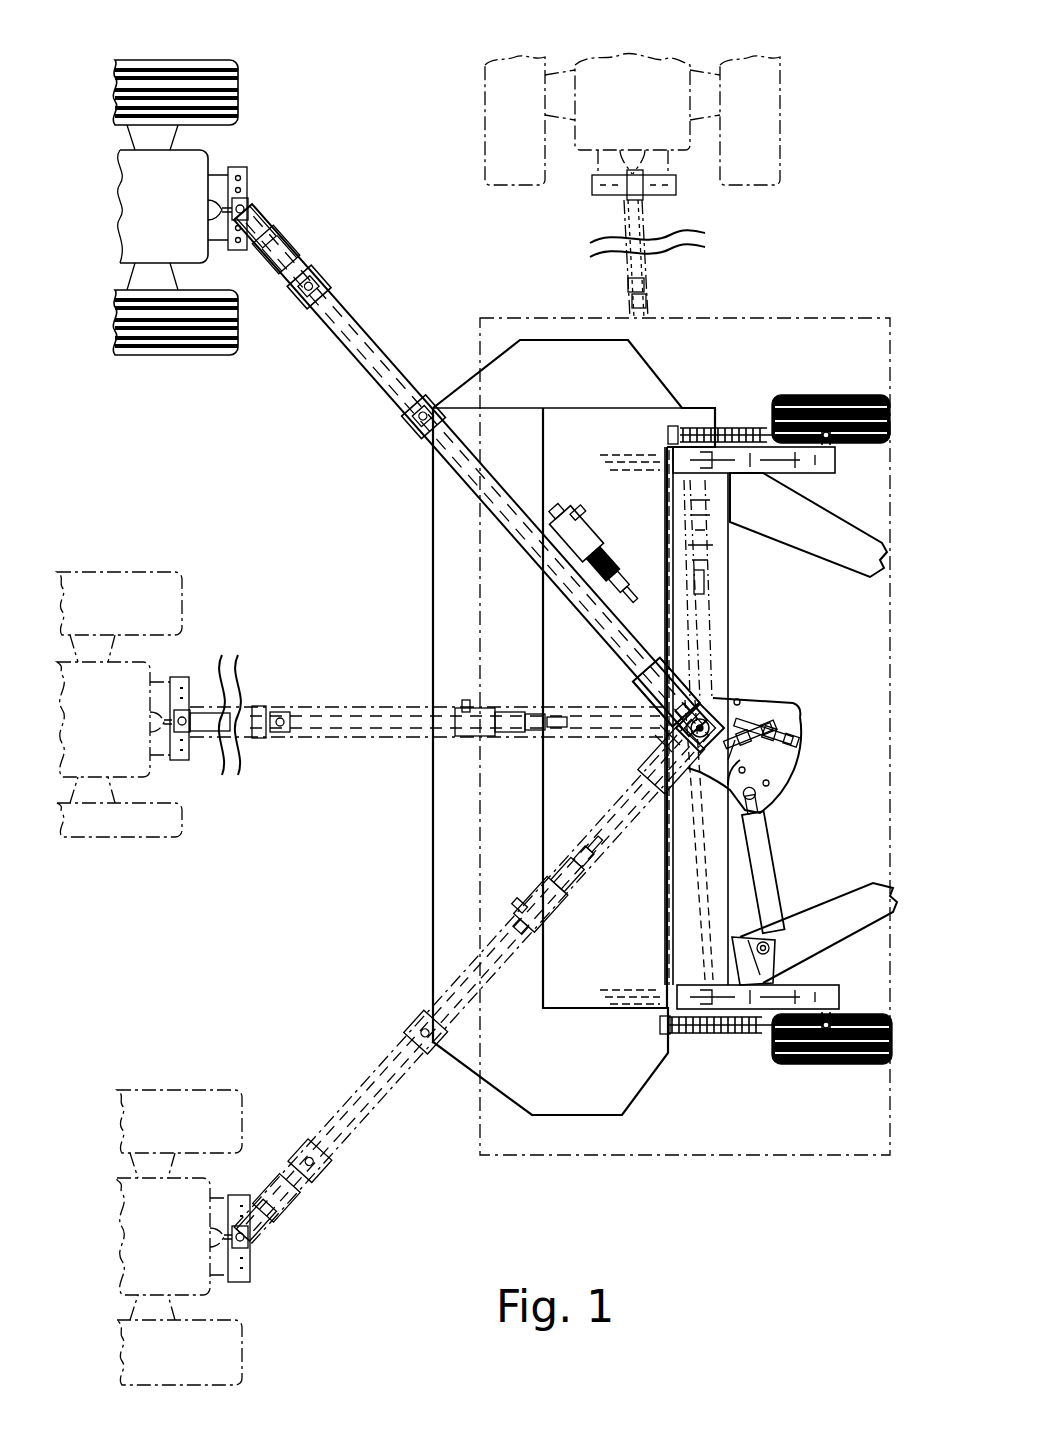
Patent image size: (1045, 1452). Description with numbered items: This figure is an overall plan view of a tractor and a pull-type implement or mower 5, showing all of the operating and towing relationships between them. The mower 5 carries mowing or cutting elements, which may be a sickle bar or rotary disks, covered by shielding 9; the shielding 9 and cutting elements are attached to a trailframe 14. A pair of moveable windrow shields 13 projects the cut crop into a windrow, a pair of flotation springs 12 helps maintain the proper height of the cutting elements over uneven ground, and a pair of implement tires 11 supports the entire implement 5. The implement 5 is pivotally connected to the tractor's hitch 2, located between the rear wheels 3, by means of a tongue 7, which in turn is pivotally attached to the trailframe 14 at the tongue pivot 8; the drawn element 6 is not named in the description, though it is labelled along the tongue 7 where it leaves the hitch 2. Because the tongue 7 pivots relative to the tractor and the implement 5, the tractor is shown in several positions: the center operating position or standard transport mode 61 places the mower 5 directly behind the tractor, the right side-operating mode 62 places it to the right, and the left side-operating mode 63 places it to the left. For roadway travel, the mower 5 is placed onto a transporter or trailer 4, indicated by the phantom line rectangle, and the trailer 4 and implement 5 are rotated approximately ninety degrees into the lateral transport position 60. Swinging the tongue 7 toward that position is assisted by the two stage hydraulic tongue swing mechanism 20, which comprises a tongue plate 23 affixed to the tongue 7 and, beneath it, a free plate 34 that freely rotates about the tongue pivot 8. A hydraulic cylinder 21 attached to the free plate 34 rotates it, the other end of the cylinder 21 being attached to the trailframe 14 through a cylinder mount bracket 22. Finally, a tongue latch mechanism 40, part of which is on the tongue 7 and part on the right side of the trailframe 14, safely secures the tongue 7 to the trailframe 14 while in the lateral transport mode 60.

The hitch 2 is at (246, 178).
The rear wheels 3 is at (238, 86).
The transporter or trailer 4 is at (774, 318).
The pull-type implement or mower 5 is at (616, 1128).
The drawbar beam 6 is at (262, 228).
The tongue 7 is at (634, 686).
The tongue pivot 8 is at (665, 738).
The shielding 9 is at (436, 940).
The implement tires 11 is at (862, 395).
The flotation springs 12 is at (752, 432).
The windrow shields 13 is at (852, 526).
The trailframe 14 is at (718, 620).
The two stage hydraulic tongue swing mechanism 20 is at (698, 810).
The hydraulic cylinder 21 is at (772, 876).
The cylinder mount bracket 22 is at (775, 948).
The tongue plate 23 is at (758, 698).
The free plate 34 is at (782, 776).
The tongue latch mechanism 40 is at (582, 500).
The lateral transport position 60 is at (802, 48).
The center operating position or standard transport mode 61 is at (100, 565).
The right side-operating mode 62 is at (167, 1070).
The left side-operating mode 63 is at (160, 54).